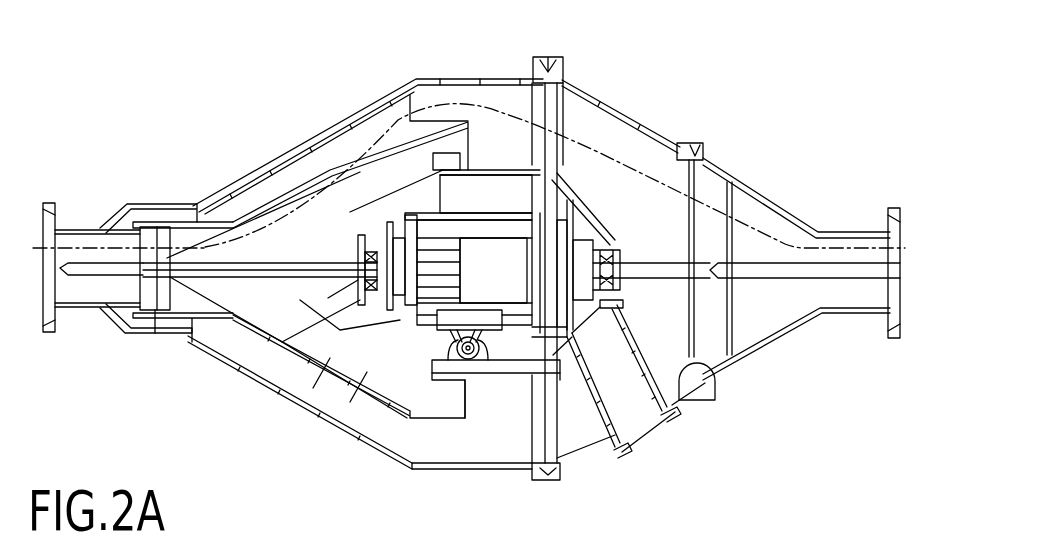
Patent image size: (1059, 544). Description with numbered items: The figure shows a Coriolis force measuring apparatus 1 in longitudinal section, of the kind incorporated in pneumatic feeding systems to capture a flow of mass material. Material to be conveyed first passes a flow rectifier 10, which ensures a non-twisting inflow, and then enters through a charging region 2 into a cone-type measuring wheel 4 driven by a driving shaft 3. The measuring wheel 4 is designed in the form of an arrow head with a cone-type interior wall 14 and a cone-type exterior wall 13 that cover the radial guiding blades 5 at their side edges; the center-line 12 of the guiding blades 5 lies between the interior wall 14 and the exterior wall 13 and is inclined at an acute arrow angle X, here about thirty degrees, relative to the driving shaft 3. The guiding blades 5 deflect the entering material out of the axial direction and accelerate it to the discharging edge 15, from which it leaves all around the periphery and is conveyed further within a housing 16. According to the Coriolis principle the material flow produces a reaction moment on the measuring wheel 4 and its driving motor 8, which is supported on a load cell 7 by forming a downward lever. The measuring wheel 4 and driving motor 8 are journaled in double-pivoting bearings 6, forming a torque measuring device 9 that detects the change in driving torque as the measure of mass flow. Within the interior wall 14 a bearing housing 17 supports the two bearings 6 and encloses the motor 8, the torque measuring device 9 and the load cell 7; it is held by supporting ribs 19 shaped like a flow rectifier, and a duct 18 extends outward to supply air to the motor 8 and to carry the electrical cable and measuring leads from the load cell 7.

The Coriolis force measuring apparatus 1 is at (682, 124).
The charging region 2 is at (153, 328).
The driving shaft 3 is at (335, 302).
The measuring wheel 4 is at (270, 387).
The radial guiding blades 5 is at (297, 400).
The double-pivoting bearings 6 is at (322, 252).
The load cell 7 is at (477, 375).
The driving motor 8 is at (512, 258).
The torque measuring device 9 is at (492, 387).
The flow rectifier 10 is at (83, 303).
The center-line of the guiding blades 12 is at (357, 218).
The cone-type exterior wall 13 is at (333, 420).
The cone-type interior wall 14 is at (360, 435).
The discharging edge 15 is at (420, 118).
The housing 16 is at (420, 468).
The bearing housing 17 is at (503, 167).
The duct 18 is at (603, 437).
The supporting ribs 19 is at (717, 383).
The arrow angle X is at (295, 198).